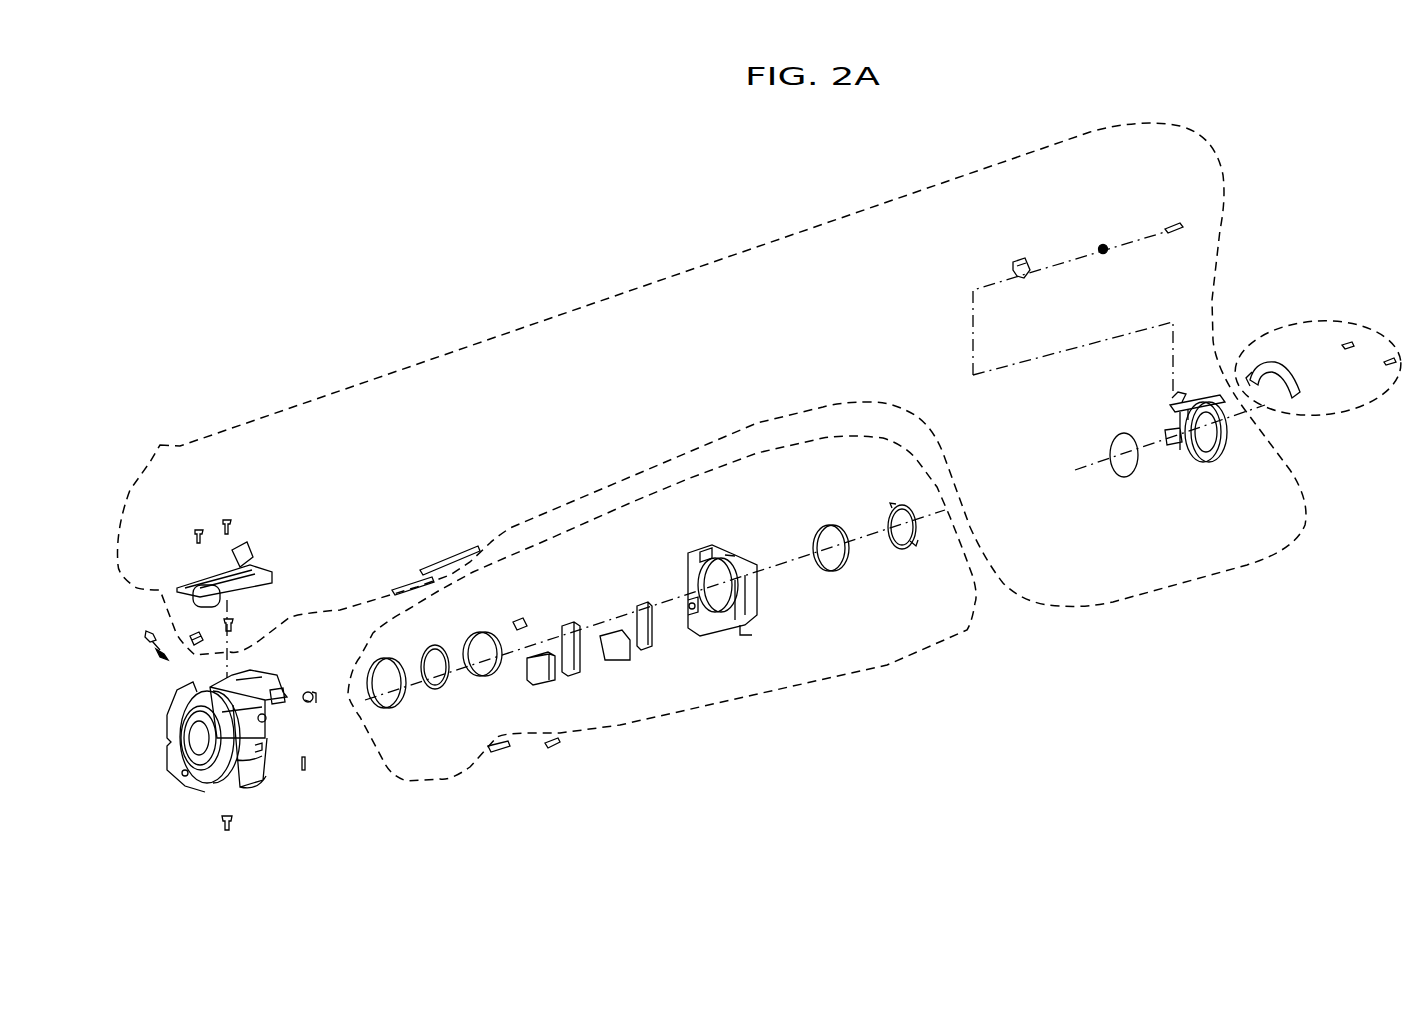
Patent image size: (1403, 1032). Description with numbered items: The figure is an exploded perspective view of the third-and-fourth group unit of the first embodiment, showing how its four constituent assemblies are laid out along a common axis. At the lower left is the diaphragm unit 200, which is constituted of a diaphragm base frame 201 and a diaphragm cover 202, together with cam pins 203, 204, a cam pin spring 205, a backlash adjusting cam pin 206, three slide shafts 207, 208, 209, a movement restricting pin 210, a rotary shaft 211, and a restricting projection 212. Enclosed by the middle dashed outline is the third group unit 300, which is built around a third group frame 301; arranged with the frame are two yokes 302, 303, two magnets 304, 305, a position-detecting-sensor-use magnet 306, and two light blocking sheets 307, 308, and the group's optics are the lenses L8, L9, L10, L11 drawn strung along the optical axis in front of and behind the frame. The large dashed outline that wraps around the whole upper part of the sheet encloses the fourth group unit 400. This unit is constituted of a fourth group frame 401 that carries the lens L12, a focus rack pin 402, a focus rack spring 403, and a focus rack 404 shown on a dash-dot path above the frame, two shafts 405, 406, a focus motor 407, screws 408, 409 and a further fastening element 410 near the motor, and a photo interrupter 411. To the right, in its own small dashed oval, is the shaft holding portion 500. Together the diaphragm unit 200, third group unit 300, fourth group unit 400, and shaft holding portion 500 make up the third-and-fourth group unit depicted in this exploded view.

The diaphragm unit 200 is at (355, 744).
The diaphragm base frame 201 is at (233, 777).
The diaphragm cover 202 is at (213, 778).
The cam pin 203 is at (309, 703).
The cam pin 204 is at (228, 830).
The cam pin spring 205 is at (160, 657).
The backlash adjusting cam pin 206 is at (147, 634).
The slide shaft 207 is at (306, 768).
The slide shaft 208 is at (313, 693).
The slide shaft 209 is at (270, 680).
The movement restricting pin 210 is at (500, 752).
The rotary shaft 211 is at (557, 748).
The restricting projection 212 is at (266, 733).
The third group unit 300 is at (800, 768).
The third group frame 301 is at (750, 612).
The yoke 302 is at (655, 645).
The yoke 303 is at (628, 658).
The magnet 304 is at (580, 660).
The magnet 305 is at (542, 675).
The position-detecting-sensor-use magnet 306 is at (530, 622).
The light blocking sheet 307 is at (447, 685).
The light blocking sheet 308 is at (912, 545).
The fourth group unit 400 is at (1265, 602).
The fourth group frame 401 is at (1203, 463).
The focus rack pin 402 is at (1176, 224).
The focus rack spring 403 is at (1104, 246).
The focus rack 404 is at (1022, 260).
The shaft 405 is at (448, 560).
The shaft 406 is at (397, 590).
The focus motor 407 is at (258, 578).
The screw 408 is at (195, 530).
The screw 409 is at (228, 519).
The screw 410 is at (234, 622).
The photo interrupter 411 is at (192, 636).
The shaft holding portion 500 is at (1340, 425).
The lens L8 is at (392, 700).
The lens L9 is at (478, 648).
The lens L10 is at (492, 645).
The lens L11 is at (826, 540).
The lens L12 is at (1122, 448).